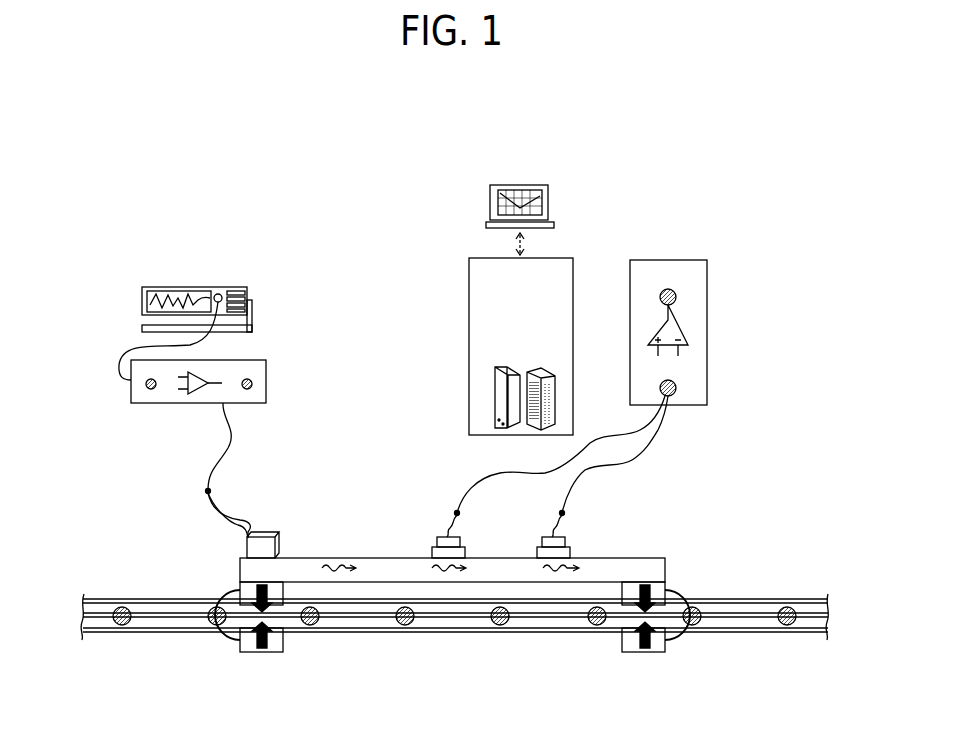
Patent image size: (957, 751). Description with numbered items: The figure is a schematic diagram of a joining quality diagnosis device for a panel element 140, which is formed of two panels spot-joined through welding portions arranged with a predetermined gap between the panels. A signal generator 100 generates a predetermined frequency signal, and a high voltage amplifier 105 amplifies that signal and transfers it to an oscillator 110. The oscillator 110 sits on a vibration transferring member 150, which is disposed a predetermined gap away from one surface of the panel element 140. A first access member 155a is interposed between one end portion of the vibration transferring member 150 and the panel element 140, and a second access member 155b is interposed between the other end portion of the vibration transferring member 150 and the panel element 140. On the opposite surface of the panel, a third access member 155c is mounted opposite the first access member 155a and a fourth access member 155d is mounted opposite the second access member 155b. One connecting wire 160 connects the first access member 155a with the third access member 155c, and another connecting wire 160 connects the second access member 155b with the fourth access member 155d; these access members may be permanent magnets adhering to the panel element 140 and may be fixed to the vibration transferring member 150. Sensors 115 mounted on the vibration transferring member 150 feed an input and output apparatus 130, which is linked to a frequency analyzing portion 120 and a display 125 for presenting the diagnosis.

The signal generator 100 is at (142, 300).
The high voltage amplifier 105 is at (266, 379).
The oscillator 110 is at (275, 548).
The sensor 115 is at (537, 541).
The frequency analyzing portion 120 is at (469, 388).
The display 125 is at (490, 200).
The input and output apparatus 130 is at (707, 320).
The panel element 140 is at (765, 598).
The vibration transferring member 150 is at (393, 566).
The first access member 155a is at (245, 588).
The second access member 155b is at (655, 588).
The third access member 155c is at (275, 640).
The fourth access member 155d is at (630, 645).
The connecting wire 160 is at (232, 640).